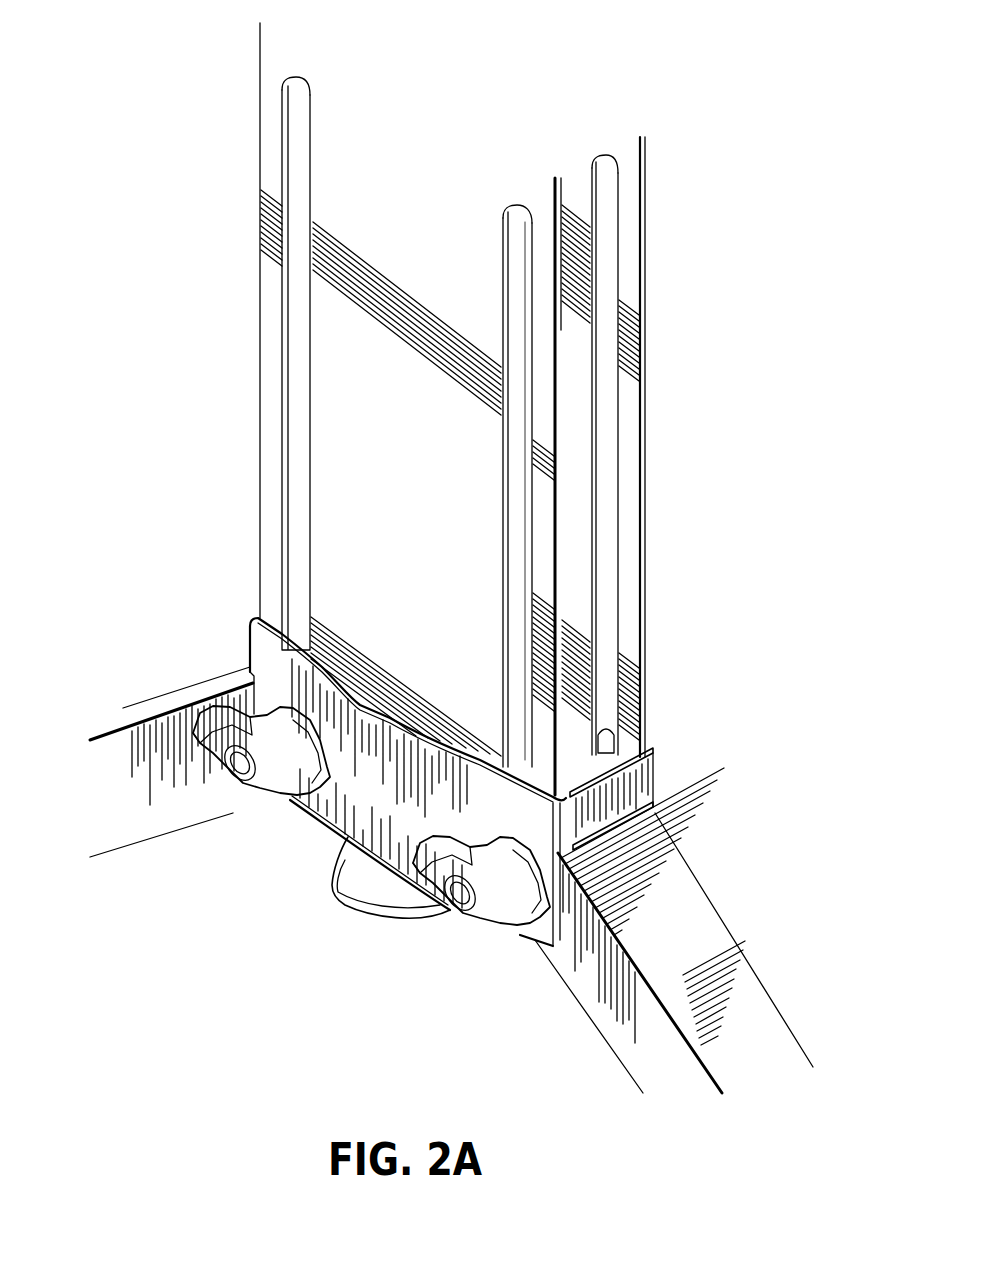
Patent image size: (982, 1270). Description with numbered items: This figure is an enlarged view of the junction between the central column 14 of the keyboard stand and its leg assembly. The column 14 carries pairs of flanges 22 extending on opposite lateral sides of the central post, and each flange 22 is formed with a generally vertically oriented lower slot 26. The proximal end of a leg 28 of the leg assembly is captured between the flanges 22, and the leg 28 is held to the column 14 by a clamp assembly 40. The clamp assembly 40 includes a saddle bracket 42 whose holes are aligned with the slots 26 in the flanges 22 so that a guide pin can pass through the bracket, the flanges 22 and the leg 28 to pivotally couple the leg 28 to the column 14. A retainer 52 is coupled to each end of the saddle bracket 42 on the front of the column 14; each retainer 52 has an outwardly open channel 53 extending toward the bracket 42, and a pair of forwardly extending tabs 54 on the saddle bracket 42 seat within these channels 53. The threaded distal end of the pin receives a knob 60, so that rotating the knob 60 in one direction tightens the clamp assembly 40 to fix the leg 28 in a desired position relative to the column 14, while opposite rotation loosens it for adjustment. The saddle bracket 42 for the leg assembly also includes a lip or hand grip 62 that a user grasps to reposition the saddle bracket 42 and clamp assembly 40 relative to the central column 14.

The central column 14 is at (254, 318).
The flanges 22 is at (394, 429).
The lower slot 26 is at (285, 432).
The leg 28 is at (180, 697).
The clamp assembly 40 is at (392, 713).
The saddle bracket 42 is at (399, 803).
The retainer 52 is at (660, 750).
The channel 53 is at (630, 827).
The tabs 54 is at (627, 787).
The knob 60 is at (270, 783).
The hand grip 62 is at (390, 908).